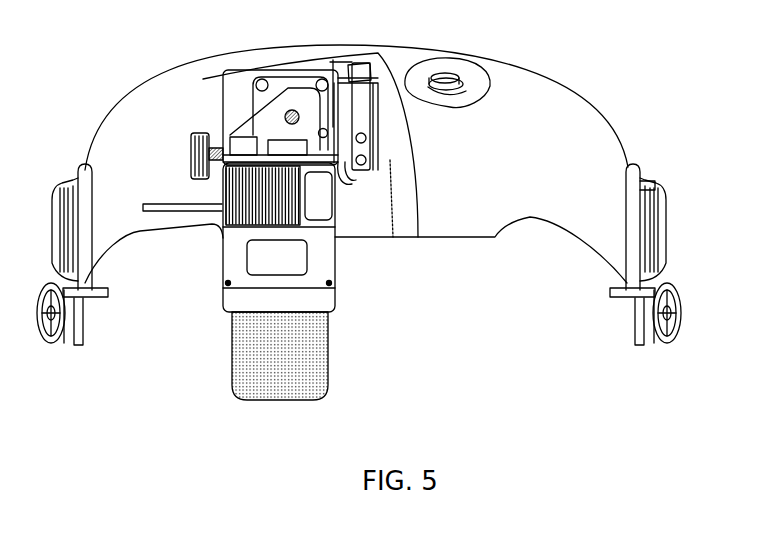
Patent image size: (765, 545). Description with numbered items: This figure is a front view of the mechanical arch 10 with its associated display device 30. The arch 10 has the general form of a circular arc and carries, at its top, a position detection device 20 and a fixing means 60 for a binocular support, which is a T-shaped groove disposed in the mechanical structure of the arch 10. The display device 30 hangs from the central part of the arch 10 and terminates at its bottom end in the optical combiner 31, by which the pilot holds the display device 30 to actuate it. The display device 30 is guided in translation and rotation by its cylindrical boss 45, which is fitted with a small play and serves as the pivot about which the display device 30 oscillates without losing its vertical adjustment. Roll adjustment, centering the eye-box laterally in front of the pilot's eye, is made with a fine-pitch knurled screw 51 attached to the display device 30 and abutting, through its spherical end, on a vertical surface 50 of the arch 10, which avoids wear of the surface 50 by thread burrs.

The mechanical arch 10 is at (522, 80).
The position detection device 20 is at (445, 73).
The display device 30 is at (243, 253).
The optical combiner 31 is at (243, 360).
The cylindrical boss 45 is at (290, 110).
The vertical surface 50 is at (343, 185).
The fine-pitch knurled screw 51 is at (193, 153).
The fixing means for a binocular support 60 is at (362, 93).